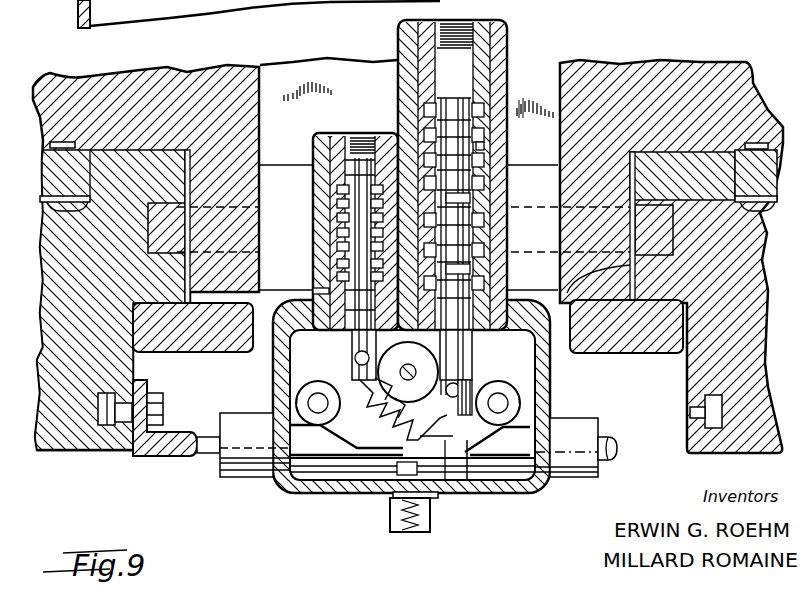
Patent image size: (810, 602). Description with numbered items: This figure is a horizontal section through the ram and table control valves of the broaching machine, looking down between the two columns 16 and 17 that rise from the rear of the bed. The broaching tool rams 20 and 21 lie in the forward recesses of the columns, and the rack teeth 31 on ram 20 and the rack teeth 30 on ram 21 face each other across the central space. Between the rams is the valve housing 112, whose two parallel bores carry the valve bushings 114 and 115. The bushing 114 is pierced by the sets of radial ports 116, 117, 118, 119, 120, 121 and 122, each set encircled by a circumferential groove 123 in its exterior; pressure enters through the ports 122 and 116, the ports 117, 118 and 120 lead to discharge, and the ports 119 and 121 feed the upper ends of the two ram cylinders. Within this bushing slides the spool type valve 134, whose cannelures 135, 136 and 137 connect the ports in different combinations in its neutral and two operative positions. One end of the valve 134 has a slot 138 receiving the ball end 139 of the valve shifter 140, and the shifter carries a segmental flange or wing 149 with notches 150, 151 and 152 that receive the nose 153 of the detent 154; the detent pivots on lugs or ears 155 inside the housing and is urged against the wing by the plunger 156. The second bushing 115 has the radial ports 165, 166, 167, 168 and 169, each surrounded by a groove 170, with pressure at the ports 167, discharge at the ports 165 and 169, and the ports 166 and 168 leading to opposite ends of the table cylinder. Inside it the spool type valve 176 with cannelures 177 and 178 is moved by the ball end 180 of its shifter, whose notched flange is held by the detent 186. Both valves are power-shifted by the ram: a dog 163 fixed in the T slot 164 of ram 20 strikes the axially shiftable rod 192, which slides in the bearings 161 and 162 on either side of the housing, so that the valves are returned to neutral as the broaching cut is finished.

The column 16 is at (173, 47).
The column 17 is at (700, 67).
The broaching tool ram 20 is at (48, 443).
The broaching tool ram 21 is at (697, 370).
The rack teeth 30 is at (563, 295).
The rack teeth 31 is at (183, 196).
The housing 112 is at (503, 480).
The valve bushing 114 is at (507, 25).
The valve bushing 115 is at (337, 135).
The radial ports 116 is at (481, 110).
The radial ports 117 is at (483, 136).
The radial ports 118 is at (483, 161).
The radial ports 119 is at (483, 184).
The radial ports 120 is at (483, 221).
The radial ports 121 is at (483, 251).
The radial ports 122 is at (483, 285).
The circumferential groove 123 is at (527, 98).
The spool type valve 134 is at (477, 351).
The cannelure 135 is at (470, 270).
The cannelure 136 is at (470, 199).
The cannelure 137 is at (490, 148).
The slot 138 is at (478, 393).
The ball end 139 is at (458, 422).
The valve shifter 140 is at (422, 416).
The segmental flange or wing 149 is at (398, 423).
The notch 150 is at (350, 410).
The notch 151 is at (390, 420).
The notch 152 is at (403, 443).
The nose 153 is at (410, 425).
The detent 154 is at (467, 470).
The lugs or ears 155 is at (545, 368).
The plunger 156 is at (445, 487).
The bearing 161 is at (573, 423).
The bearing 162 is at (233, 470).
The dog 163 is at (157, 452).
The T slot 164 is at (107, 397).
The radial ports 165 is at (337, 204).
The radial ports 166 is at (337, 233).
The radial ports 167 is at (337, 265).
The radial ports 168 is at (337, 275).
The radial ports 169 is at (313, 293).
The circumferential groove 170 is at (337, 217).
The spool type valve 176 is at (357, 344).
The cannelure 177 is at (337, 247).
The cannelure 178 is at (350, 192).
The ball end 180 is at (355, 359).
The detent 186 is at (393, 430).
The axially shiftable rod 192 is at (207, 440).